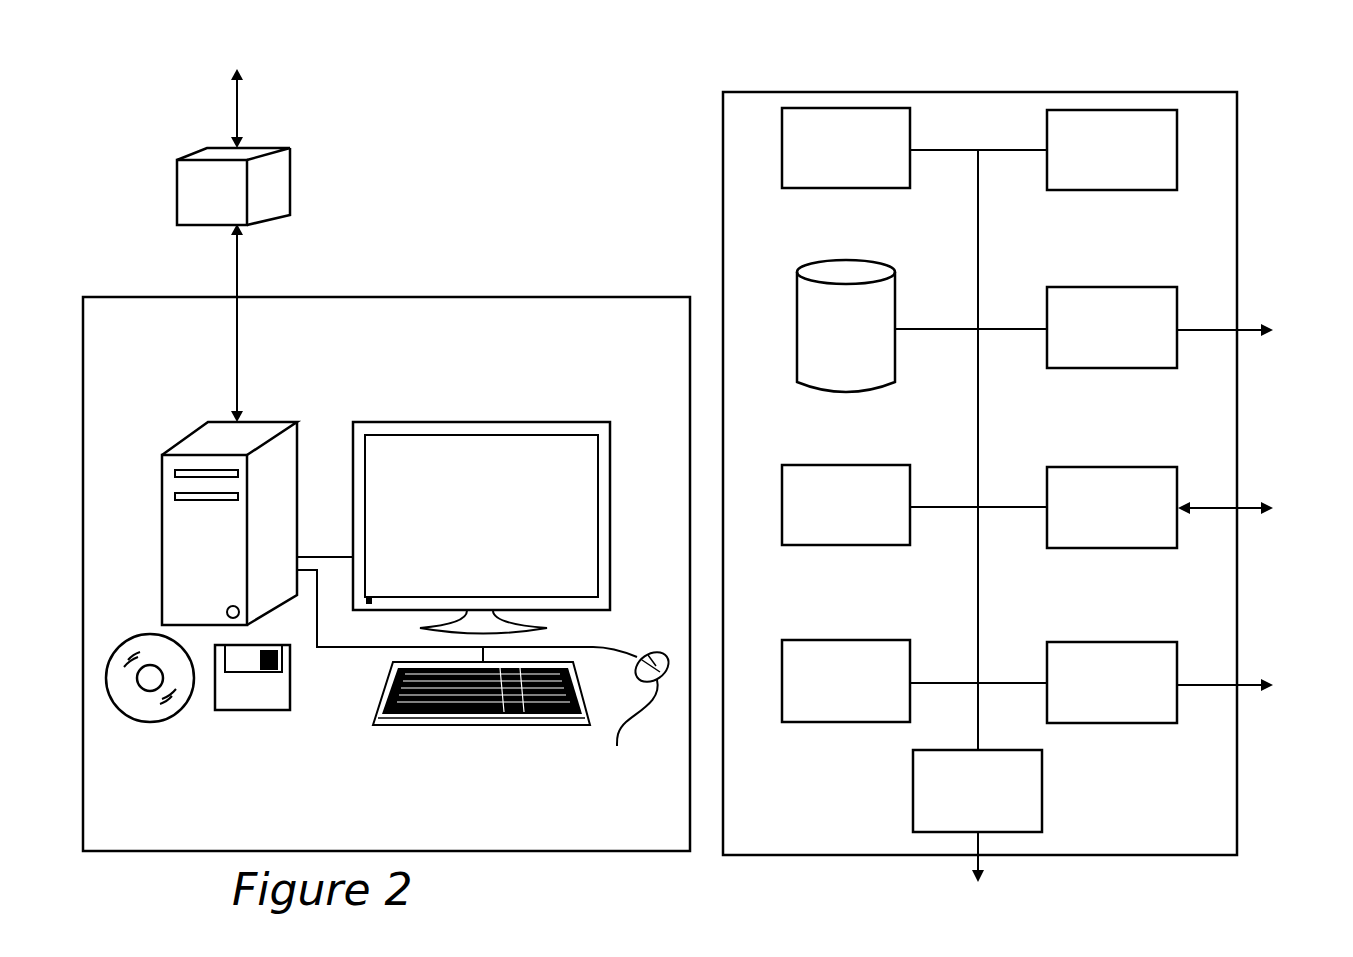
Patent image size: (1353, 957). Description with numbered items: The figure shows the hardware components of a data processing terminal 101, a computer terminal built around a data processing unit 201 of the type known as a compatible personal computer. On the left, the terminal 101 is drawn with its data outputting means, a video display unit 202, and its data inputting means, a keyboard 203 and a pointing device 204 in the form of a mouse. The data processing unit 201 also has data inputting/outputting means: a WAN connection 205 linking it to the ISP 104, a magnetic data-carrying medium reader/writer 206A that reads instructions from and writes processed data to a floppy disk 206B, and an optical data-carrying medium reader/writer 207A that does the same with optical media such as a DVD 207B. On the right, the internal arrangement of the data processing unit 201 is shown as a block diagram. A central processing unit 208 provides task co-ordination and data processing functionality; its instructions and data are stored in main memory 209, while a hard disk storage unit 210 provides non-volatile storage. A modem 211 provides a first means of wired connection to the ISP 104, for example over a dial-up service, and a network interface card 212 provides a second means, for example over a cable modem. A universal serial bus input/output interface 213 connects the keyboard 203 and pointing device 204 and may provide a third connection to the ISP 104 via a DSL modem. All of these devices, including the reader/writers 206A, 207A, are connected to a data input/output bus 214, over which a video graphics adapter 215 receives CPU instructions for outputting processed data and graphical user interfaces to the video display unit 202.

The terminal 101 is at (497, 297).
The ISP 104 is at (177, 197).
The data processing unit 201 is at (162, 543).
The video display unit 202 is at (500, 450).
The keyboard 203 is at (410, 715).
The pointing device 204 is at (634, 708).
The WAN connection 205 is at (239, 290).
The magnetic data-carrying medium reader/writer 206A is at (213, 473).
The floppy disk 206B is at (263, 690).
The optical data-carrying medium reader/writer 207A is at (172, 495).
The DVD+/-R/RW 207B is at (155, 702).
The central processing unit 208 is at (803, 123).
The main memory 209 is at (1160, 123).
The hard disk storage unit 210 is at (813, 272).
The modem 211 is at (1160, 300).
The network interface card 212 is at (1160, 482).
The universal serial bus input/output interface 213 is at (933, 823).
The data input/output bus 214 is at (978, 412).
The video graphics adapter 215 is at (1160, 657).